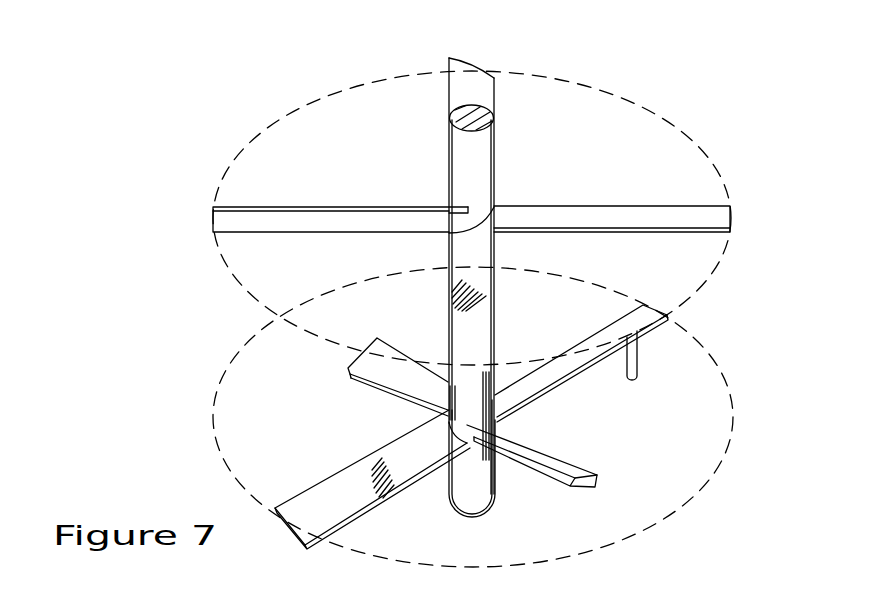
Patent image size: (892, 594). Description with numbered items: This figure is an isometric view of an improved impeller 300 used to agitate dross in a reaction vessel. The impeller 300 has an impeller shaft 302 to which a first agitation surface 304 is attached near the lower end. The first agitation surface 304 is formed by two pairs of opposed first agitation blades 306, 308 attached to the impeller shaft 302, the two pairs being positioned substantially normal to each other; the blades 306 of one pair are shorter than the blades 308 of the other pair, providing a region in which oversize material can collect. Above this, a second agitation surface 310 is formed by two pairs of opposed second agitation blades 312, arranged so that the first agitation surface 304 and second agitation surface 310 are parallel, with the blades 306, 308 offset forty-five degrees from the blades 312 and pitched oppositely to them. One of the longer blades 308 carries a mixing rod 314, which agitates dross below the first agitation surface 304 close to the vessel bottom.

The impeller 300 is at (196, 125).
The impeller shaft 302 is at (460, 157).
The first agitation surface 304 is at (670, 442).
The first agitation blades 306 is at (350, 375).
The first agitation blades 308 is at (335, 490).
The second agitation surface 310 is at (682, 172).
The second agitation blades 312 is at (248, 225).
The mixing rod 314 is at (636, 360).